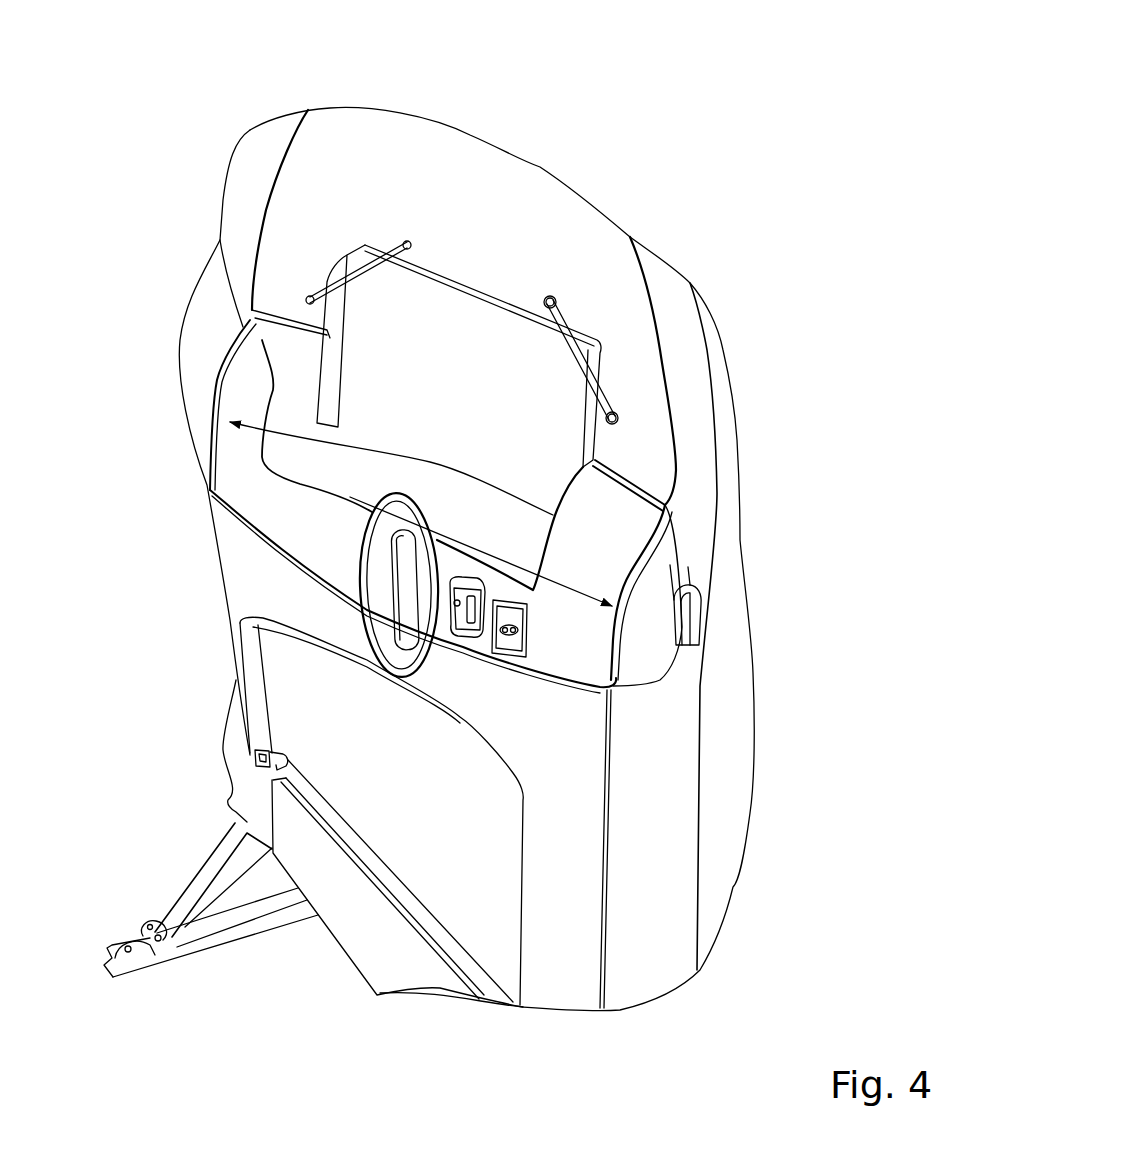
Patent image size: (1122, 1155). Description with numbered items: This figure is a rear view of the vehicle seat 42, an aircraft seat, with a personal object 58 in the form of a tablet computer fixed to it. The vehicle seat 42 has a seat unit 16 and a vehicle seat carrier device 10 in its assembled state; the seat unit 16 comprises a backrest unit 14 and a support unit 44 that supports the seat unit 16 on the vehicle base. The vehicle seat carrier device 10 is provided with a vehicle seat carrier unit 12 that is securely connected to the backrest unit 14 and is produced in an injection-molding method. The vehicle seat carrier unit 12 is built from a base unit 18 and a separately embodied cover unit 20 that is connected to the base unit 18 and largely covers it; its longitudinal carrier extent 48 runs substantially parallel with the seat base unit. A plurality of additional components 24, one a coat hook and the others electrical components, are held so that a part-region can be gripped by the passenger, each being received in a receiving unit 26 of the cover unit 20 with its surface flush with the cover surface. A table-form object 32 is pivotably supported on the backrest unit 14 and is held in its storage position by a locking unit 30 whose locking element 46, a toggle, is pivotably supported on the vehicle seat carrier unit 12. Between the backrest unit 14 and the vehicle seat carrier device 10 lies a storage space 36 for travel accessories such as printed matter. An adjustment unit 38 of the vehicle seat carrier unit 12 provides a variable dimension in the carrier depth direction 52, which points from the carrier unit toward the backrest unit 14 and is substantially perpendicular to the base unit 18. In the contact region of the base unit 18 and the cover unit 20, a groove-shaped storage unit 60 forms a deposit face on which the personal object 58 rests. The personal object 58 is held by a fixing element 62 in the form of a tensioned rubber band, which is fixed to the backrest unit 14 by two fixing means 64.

The vehicle seat carrier device 10 is at (792, 595).
The vehicle seat carrier unit 12 is at (792, 633).
The backrest unit 14 is at (678, 873).
The seat unit 16 is at (592, 96).
The base unit 18 is at (270, 345).
The cover unit 20 is at (250, 327).
The additional components 24 is at (690, 622).
The receiving unit 26 is at (473, 575).
The locking unit 30 is at (401, 490).
The object 32 is at (578, 943).
The storage space 36 is at (336, 298).
The adjustment unit 38 is at (676, 493).
The vehicle seat 42 is at (731, 94).
The support unit 44 is at (188, 863).
The locking element 46 is at (400, 573).
The longitudinal carrier extent 48 is at (273, 390).
The carrier depth direction 52 is at (146, 669).
The personal object 58 is at (493, 340).
The storage unit 60 is at (529, 487).
The fixing element 62 is at (628, 306).
The fixing means 64 is at (550, 300).